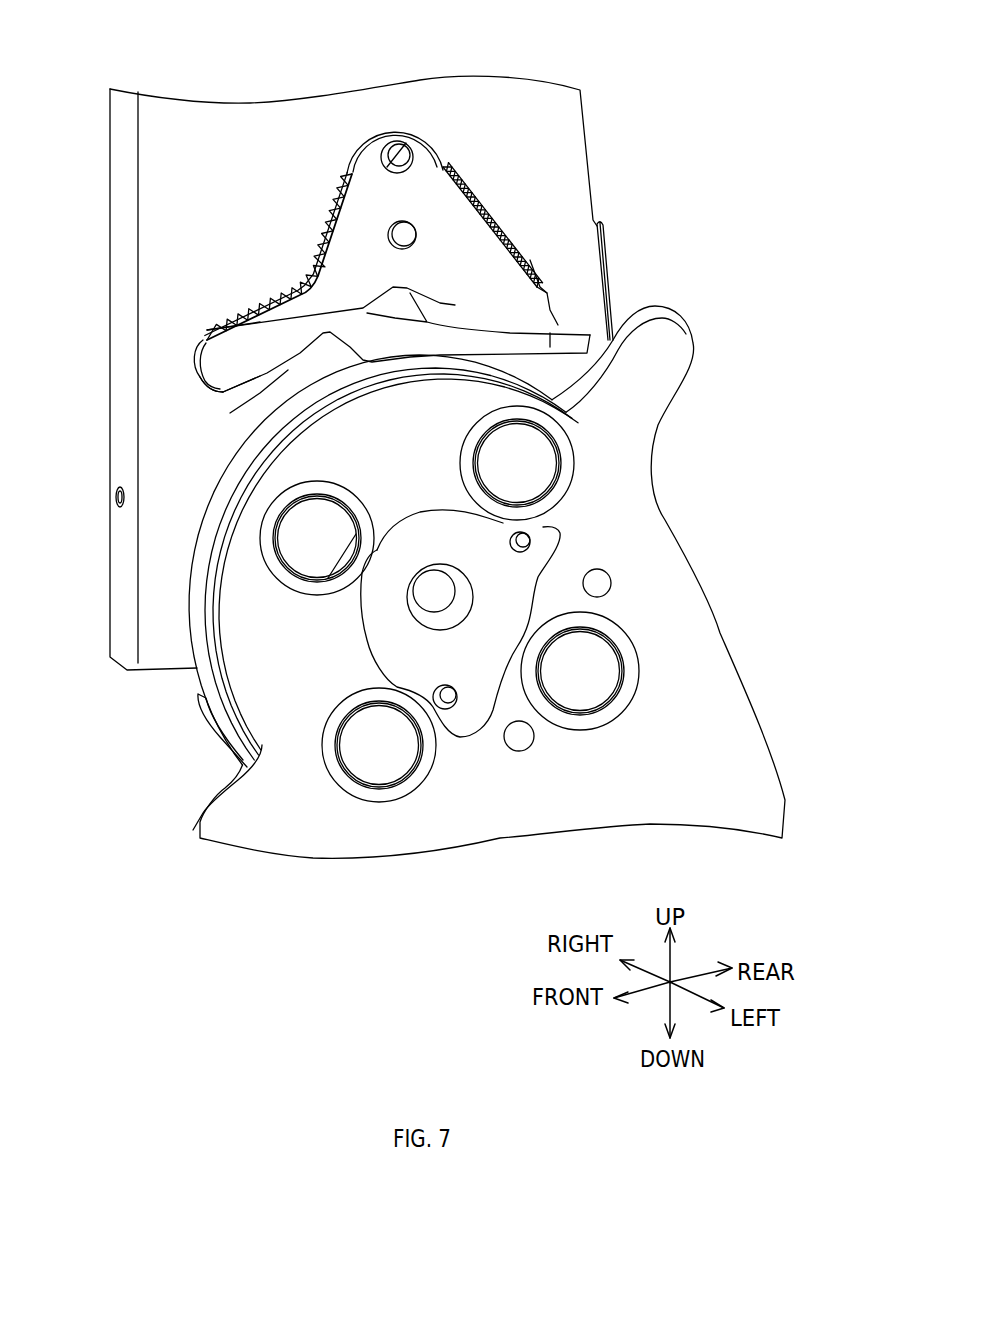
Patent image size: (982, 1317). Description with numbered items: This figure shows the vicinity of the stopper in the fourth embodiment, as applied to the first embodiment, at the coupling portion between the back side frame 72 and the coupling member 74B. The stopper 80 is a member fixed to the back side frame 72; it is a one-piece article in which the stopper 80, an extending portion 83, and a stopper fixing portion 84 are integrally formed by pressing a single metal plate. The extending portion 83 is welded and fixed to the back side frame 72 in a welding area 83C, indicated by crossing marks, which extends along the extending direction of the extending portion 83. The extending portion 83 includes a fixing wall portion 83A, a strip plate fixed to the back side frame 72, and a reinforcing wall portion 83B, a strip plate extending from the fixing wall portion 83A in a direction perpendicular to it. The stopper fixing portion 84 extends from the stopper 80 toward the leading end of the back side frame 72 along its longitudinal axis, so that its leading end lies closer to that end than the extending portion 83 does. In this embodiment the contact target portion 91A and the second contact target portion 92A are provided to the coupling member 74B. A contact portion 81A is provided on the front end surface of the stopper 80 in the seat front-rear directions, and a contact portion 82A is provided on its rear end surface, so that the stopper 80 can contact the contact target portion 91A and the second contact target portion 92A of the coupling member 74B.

The back side frame 72 is at (557, 110).
The coupling member 74B is at (751, 750).
The stopper 80 is at (490, 318).
The contact portion 81A is at (230, 413).
The contact portion 82A is at (587, 351).
The extending portion 83 is at (233, 367).
The fixing wall portion 83A is at (207, 329).
The reinforcing wall portion 83B is at (192, 382).
The welding area 83C is at (240, 306).
The stopper fixing portion 84 is at (420, 188).
The contact target portion 91A is at (220, 788).
The second contact target portion 92A is at (625, 312).